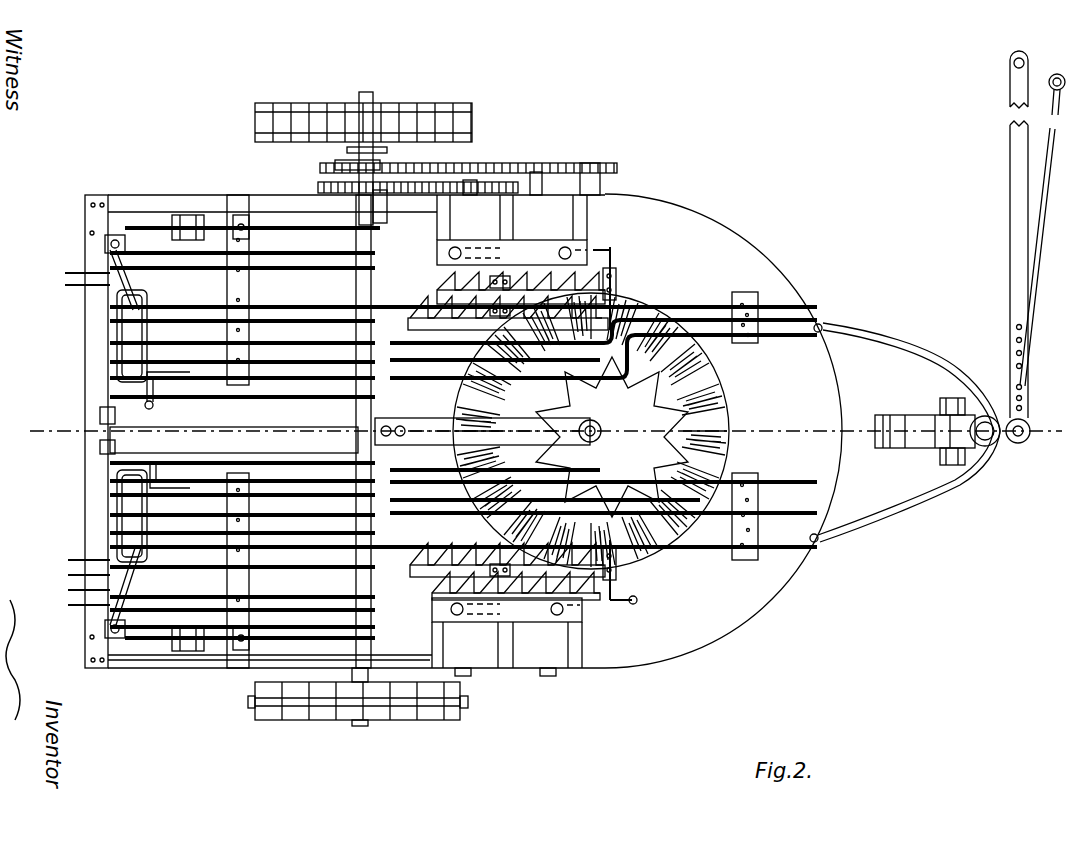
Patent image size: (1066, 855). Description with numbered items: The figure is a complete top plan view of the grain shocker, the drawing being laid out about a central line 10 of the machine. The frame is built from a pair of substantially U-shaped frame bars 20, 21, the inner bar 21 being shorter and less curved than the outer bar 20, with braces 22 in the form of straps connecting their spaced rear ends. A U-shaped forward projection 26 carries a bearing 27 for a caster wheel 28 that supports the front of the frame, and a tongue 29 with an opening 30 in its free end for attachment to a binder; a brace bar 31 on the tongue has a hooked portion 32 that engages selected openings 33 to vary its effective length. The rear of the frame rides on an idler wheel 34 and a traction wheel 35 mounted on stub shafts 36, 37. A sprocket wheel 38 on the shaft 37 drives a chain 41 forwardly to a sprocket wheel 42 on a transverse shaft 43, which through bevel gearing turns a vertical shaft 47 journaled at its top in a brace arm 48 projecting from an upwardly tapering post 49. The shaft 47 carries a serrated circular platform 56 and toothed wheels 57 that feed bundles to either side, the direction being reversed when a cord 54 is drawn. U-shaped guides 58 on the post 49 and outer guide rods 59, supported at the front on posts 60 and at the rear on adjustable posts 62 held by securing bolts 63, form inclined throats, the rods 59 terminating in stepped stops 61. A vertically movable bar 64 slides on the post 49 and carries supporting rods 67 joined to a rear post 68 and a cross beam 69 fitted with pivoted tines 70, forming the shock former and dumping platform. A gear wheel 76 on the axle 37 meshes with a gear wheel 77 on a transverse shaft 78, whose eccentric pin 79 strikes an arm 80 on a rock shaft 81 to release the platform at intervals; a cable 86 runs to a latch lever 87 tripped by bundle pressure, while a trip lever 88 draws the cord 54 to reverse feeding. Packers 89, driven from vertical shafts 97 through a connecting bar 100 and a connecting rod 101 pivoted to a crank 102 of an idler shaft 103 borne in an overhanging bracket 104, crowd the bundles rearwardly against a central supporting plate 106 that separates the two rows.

The pivot axis 10 is at (1033, 431).
The frame bar 20 is at (135, 668).
The frame bar 21 is at (130, 614).
The braces 22 is at (110, 208).
The forward projection 26 is at (912, 348).
The bearing 27 is at (1005, 450).
The caster wheel 28 is at (903, 448).
The tongue 29 is at (1010, 207).
The opening 30 is at (1012, 63).
The brace bar 31 is at (1045, 160).
The hooked portion 32 is at (1012, 368).
The openings 33 is at (1015, 338).
The wheel 34 is at (287, 722).
The wheel 35 is at (294, 110).
The stub shaft 36 is at (358, 727).
The stub shaft 37 is at (364, 100).
The sprocket wheel 38 is at (335, 163).
The chain 41 is at (580, 165).
The sprocket wheel 42 is at (602, 168).
The shaft 43 is at (600, 185).
The vertical shaft 47 is at (600, 418).
The brace arm 48 is at (425, 424).
The post 49 is at (400, 330).
The flexible means 54 is at (295, 648).
The movable circular platform 56 is at (718, 354).
The toothed wheels 57 is at (645, 410).
The guides 58 is at (420, 499).
The outer guide rods 59 is at (315, 380).
The posts 60 is at (760, 340).
The stops 61 is at (107, 356).
The posts 62 is at (227, 276).
The securing bolts 63 is at (242, 215).
The vertically movable bar 64 is at (358, 416).
The supporting rods 67 is at (160, 400).
The rear post 68 is at (100, 410).
The cross beam 69 is at (375, 570).
The tines 70 is at (75, 290).
The gear wheel 76 is at (318, 187).
The gear wheel 77 is at (440, 190).
The transverse shaft 78 is at (465, 195).
The pin 79 is at (450, 165).
The arm 80 is at (505, 166).
The rock shaft 81 is at (545, 180).
The cable 86 is at (272, 225).
The latch lever 87 is at (111, 270).
The trip lever 88 is at (75, 575).
The packers 89 is at (560, 295).
The vertical shafts 97 is at (460, 247).
The connecting bar 100 is at (430, 604).
The connecting rod 101 is at (616, 578).
The crank 102 is at (640, 612).
The idler shaft 103 is at (575, 247).
The overhanging bracket 104 is at (508, 228).
The supporting plate 106 is at (252, 424).